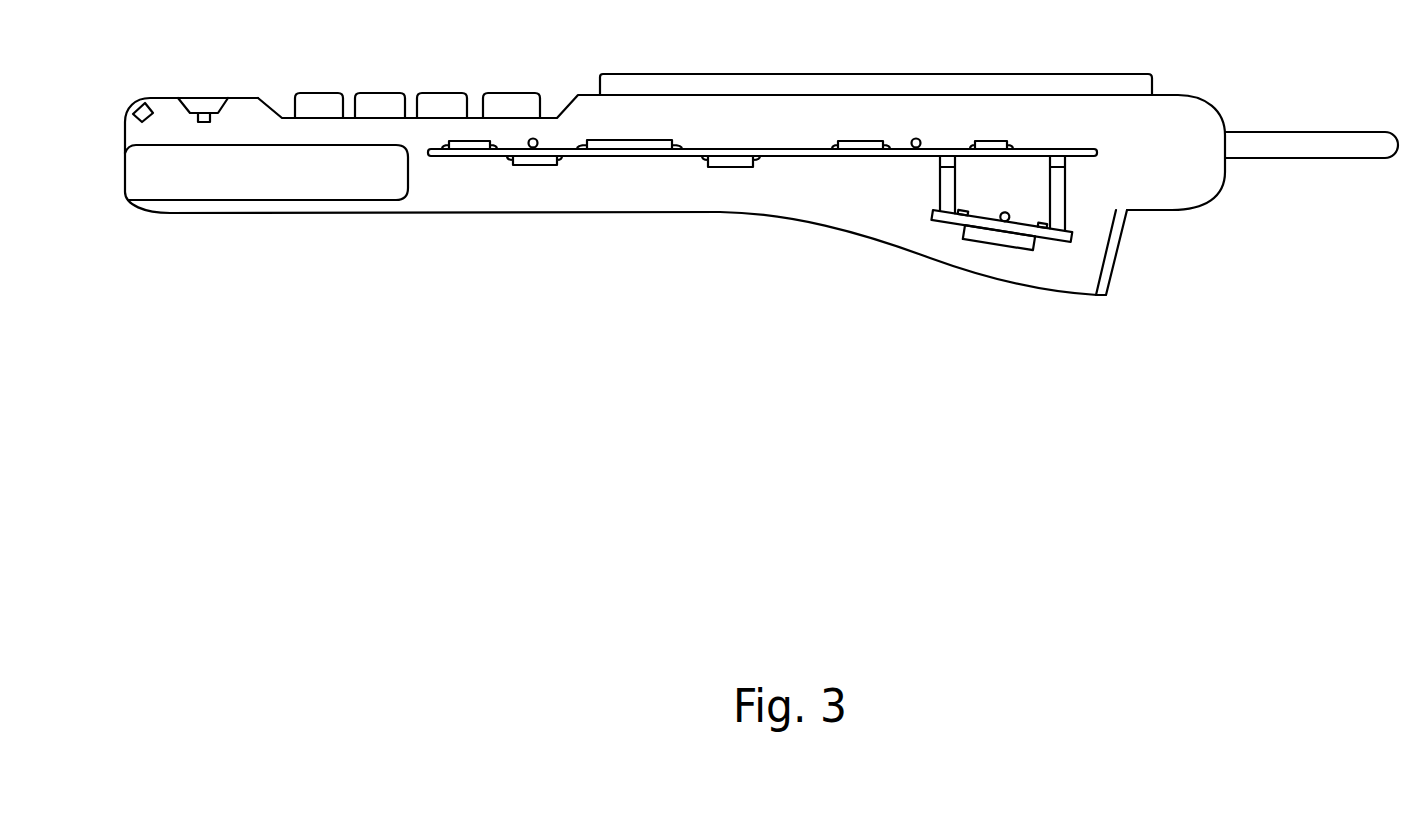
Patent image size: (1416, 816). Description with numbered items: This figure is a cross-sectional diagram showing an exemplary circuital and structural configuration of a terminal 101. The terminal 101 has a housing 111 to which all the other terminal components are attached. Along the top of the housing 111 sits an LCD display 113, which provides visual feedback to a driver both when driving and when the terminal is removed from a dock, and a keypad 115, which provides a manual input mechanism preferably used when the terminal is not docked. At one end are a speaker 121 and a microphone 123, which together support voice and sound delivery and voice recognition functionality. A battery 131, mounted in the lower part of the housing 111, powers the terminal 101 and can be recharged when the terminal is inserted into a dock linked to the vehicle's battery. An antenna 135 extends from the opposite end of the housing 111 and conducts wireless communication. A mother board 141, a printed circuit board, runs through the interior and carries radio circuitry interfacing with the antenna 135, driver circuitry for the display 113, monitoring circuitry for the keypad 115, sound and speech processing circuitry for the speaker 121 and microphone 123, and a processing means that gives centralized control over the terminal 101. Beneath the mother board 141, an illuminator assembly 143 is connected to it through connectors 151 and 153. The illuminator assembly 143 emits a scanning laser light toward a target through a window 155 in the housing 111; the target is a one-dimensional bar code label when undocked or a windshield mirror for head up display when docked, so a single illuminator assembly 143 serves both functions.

The terminal 101 is at (527, 362).
The housing 111 is at (610, 213).
The LCD display 113 is at (810, 73).
The keypad 115 is at (427, 80).
The speaker 121 is at (203, 97).
The microphone 123 is at (140, 103).
The battery 131 is at (295, 200).
The antenna 135 is at (1287, 132).
The mother board 141 is at (785, 157).
The illuminator assembly 143 is at (955, 222).
The connector 151 is at (940, 182).
The connector 153 is at (1067, 183).
The window 155 is at (1117, 253).